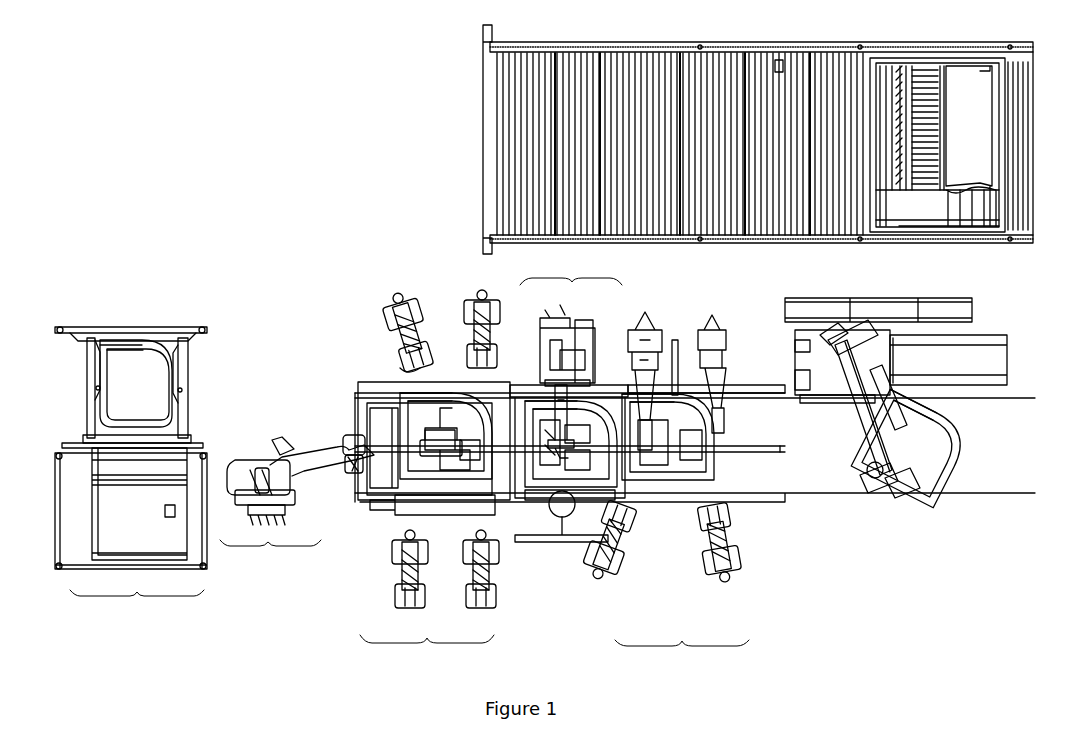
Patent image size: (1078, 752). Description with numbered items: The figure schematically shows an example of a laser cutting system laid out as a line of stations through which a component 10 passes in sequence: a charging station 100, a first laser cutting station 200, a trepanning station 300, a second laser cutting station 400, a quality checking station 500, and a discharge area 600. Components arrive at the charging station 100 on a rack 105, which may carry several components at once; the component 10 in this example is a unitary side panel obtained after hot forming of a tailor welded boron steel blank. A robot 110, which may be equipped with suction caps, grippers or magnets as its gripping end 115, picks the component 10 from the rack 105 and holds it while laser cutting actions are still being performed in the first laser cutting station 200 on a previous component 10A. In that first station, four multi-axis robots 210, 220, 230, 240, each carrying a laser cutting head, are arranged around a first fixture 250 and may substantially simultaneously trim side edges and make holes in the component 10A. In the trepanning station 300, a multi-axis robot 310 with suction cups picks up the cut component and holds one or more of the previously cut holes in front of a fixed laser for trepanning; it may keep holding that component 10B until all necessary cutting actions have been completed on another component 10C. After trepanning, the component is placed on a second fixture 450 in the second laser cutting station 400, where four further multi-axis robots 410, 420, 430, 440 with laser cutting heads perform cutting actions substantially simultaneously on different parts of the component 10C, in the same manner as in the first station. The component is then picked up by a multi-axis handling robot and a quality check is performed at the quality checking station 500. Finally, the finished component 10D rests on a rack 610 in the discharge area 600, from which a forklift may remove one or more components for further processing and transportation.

The component 10 is at (957, 500).
The previous component 10A is at (668, 500).
The component 10B is at (512, 493).
The component 10C is at (452, 505).
The component 10D is at (183, 373).
The charging station 100 is at (828, 243).
The rack 105 is at (985, 243).
The robot 110 is at (866, 498).
The end effector 115 is at (902, 515).
The first laser cutting station 200 is at (700, 529).
The robot 210 is at (648, 330).
The robot 220 is at (728, 340).
The robot 230 is at (735, 525).
The robot 240 is at (619, 565).
The first fixture 250 is at (676, 365).
The trepanning station 300 is at (569, 376).
The multi-axis robot 310 is at (586, 344).
The second laser cutting station 400 is at (434, 529).
The multi-axis robot 410 is at (392, 330).
The multi-axis robot 420 is at (482, 305).
The multi-axis robot 430 is at (495, 570).
The multi-axis robot 440 is at (392, 572).
The second fixture 450 is at (430, 385).
The quality checking station 500 is at (297, 509).
The discharge area 600 is at (131, 475).
The rack 610 is at (183, 345).